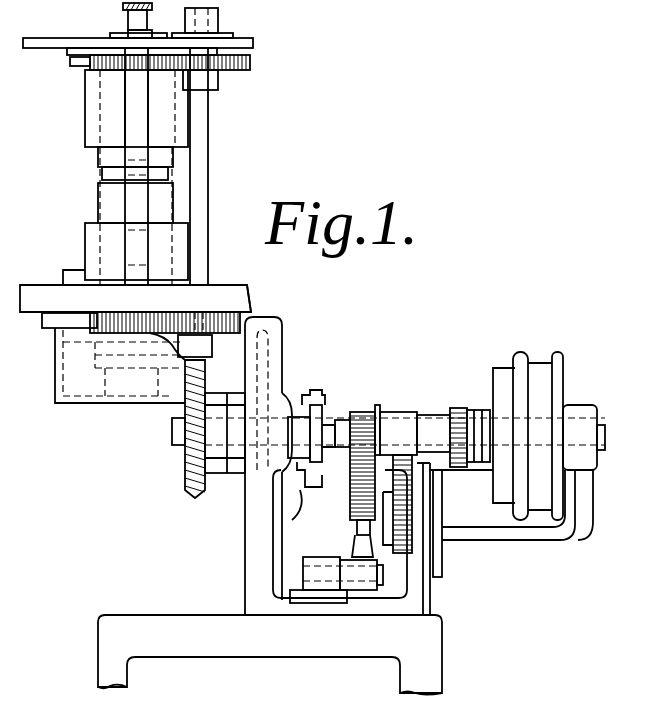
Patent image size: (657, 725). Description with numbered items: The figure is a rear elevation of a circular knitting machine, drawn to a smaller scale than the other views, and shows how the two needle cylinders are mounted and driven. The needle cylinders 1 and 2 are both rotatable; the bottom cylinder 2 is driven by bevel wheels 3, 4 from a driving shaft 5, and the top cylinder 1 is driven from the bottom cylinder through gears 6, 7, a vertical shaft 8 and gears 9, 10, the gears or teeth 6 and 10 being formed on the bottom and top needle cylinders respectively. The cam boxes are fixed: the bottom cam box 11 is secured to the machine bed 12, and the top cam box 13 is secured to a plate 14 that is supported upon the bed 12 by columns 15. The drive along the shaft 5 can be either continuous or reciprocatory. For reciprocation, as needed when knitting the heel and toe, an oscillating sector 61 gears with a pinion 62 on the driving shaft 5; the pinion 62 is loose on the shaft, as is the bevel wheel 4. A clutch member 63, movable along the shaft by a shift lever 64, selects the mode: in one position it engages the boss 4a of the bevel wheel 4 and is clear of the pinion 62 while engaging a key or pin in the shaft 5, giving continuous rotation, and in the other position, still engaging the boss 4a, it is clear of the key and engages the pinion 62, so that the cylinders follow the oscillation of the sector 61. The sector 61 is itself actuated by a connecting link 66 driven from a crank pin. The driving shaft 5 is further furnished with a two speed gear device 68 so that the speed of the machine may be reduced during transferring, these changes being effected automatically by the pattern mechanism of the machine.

The top needle cylinder 1 is at (108, 158).
The bottom needle cylinder 2 is at (108, 200).
The bevel wheel 3 is at (68, 372).
The bevel wheel 4 is at (185, 465).
The boss of the bevel wheel 4a is at (286, 404).
The driving shaft 5 is at (173, 432).
The gear 6 is at (72, 330).
The gear 7 is at (252, 312).
The vertical shaft 8 is at (199, 236).
The gear 9 is at (252, 63).
The gear 10 is at (92, 64).
The bottom cam box 11 is at (95, 246).
The machine bed 12 is at (135, 298).
The top cam box 13 is at (165, 120).
The plate 14 is at (240, 43).
The columns 15 is at (136, 118).
The oscillating sector 61 is at (356, 503).
The pinion 62 is at (361, 420).
The clutch member 63 is at (305, 432).
The shift lever 64 is at (316, 392).
The connecting link 66 is at (392, 525).
The two speed gear device 68 is at (503, 380).